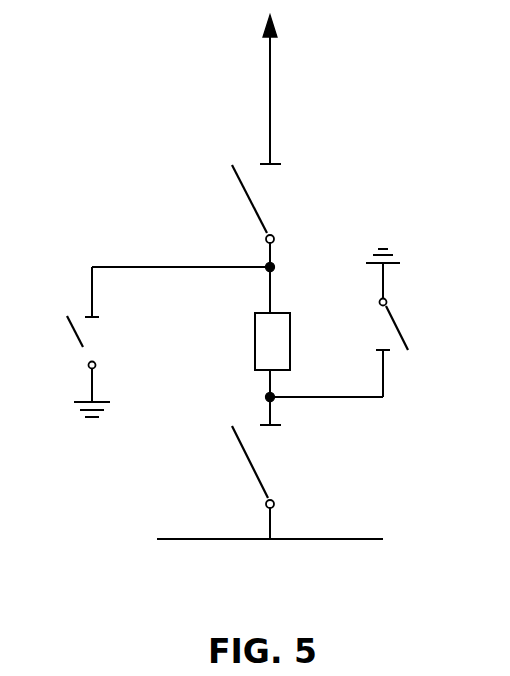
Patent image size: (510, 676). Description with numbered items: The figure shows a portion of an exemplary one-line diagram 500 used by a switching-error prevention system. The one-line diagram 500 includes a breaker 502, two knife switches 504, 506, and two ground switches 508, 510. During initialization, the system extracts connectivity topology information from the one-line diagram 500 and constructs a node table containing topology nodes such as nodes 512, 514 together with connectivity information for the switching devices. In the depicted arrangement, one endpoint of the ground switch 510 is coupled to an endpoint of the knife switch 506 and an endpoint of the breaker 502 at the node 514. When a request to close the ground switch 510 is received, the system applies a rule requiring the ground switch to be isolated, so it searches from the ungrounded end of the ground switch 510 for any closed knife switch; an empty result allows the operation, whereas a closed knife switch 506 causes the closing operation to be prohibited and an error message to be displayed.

The one-line diagram 500 is at (274, 600).
The breaker 502 is at (255, 351).
The knife switch 504 is at (252, 208).
The knife switch 506 is at (253, 477).
The ground switch 508 is at (82, 344).
The ground switch 510 is at (400, 330).
The node 512 is at (276, 266).
The node 514 is at (276, 400).